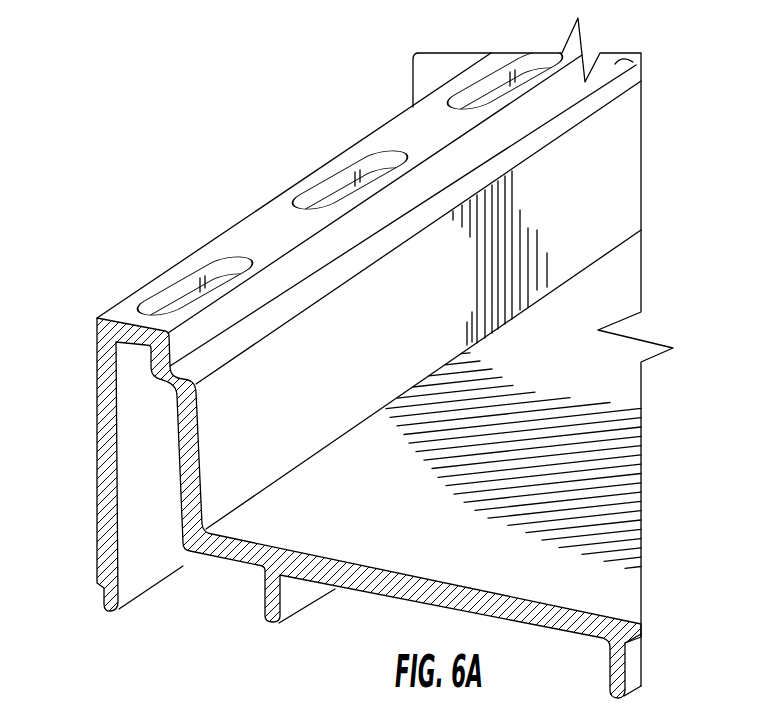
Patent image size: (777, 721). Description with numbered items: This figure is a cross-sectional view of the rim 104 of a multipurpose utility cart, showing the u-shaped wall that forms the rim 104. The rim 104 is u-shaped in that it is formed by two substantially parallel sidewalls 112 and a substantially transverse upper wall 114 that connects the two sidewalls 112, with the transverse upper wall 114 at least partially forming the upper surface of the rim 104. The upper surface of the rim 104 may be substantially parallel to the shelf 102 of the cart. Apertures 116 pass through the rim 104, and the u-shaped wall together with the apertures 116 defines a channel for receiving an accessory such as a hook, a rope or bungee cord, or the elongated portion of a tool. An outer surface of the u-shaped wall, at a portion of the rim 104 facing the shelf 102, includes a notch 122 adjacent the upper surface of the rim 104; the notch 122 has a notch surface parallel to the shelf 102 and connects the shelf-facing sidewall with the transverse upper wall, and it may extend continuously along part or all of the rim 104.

The shelf 102 is at (376, 357).
The rim 104 is at (249, 247).
The sidewalls 112 is at (108, 403).
The transverse upper wall 114 is at (127, 327).
The aperture 116 is at (337, 192).
The notch 122 is at (641, 50).